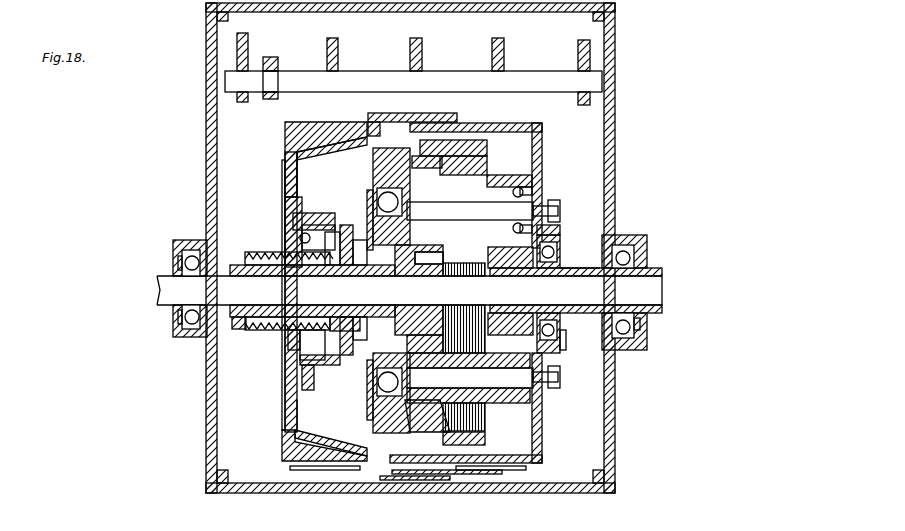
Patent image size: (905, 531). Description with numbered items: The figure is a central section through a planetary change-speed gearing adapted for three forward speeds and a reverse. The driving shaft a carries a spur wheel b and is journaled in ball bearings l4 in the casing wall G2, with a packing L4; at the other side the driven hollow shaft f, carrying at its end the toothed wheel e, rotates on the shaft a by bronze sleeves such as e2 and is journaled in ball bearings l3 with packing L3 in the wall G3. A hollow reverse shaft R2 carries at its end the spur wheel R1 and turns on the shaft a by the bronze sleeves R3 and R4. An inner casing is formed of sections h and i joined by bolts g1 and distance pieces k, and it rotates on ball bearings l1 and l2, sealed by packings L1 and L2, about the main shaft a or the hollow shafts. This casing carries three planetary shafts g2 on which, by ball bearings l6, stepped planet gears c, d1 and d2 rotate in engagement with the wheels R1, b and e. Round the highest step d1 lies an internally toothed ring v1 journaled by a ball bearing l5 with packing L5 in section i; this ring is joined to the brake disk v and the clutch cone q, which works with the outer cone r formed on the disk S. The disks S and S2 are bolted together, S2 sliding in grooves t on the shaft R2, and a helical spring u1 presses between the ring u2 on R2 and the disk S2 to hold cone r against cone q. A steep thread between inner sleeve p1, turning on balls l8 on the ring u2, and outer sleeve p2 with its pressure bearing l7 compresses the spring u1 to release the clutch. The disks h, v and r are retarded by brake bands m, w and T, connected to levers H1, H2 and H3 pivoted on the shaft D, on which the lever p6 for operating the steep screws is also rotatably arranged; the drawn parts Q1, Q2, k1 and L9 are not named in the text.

The casing wall G2 is at (211, 72).
The casing wall G3 is at (614, 98).
The shaft D is at (444, 80).
The disc Q1 is at (248, 50).
The disc Q2 is at (579, 50).
The lever p6 is at (280, 67).
The lever H1 is at (505, 50).
The lever H2 is at (422, 50).
The lever H3 is at (339, 50).
The driving shaft a is at (655, 301).
The bronze sleeve e2 is at (576, 290).
The driven hollow shaft f is at (582, 278).
The hub k1 is at (510, 291).
The packing L4 is at (178, 258).
The ball bearings l4 is at (176, 320).
The packing L3 is at (648, 262).
The ball bearings l3 is at (650, 322).
The inner casing section h is at (541, 163).
The brake disk v is at (410, 116).
The toothed ring v1 is at (476, 138).
The stepped planet gear c is at (416, 156).
The stepped planet gear d1 is at (490, 170).
The stepped planet gear d2 is at (537, 181).
The planetary shafts g2 is at (553, 210).
The ball bearings l6 is at (533, 201).
The ball bearing l5 is at (332, 405).
The packing L5 is at (362, 372).
The bearing L9 is at (408, 422).
The spur wheel R1 is at (440, 270).
The bronze sleeve R3 is at (412, 310).
The inner casing section i is at (408, 340).
The spur wheel b is at (464, 308).
The distance pieces k is at (500, 392).
The bolts g1 is at (535, 380).
The ball bearing l2 is at (561, 250).
The toothed wheel e is at (570, 234).
The packing L2 is at (580, 354).
The hollow reverse shaft R2 is at (237, 268).
The inner sleeve p1 is at (252, 262).
The outer sleeve p2 is at (274, 252).
The balls l8 is at (257, 306).
The bronze sleeve R4 is at (288, 312).
The flange or ring u2 is at (255, 328).
The helical spring u1 is at (283, 340).
The pressure bearing l7 is at (305, 222).
The packing L1 is at (372, 262).
The ball bearing l1 is at (382, 312).
The grooves t is at (350, 330).
The disk S2 is at (332, 236).
The outer clutch cone r is at (322, 126).
The clutch cone q is at (324, 150).
The disk S is at (285, 156).
The brake band T is at (318, 470).
The brake band w is at (396, 477).
The brake band m is at (508, 452).